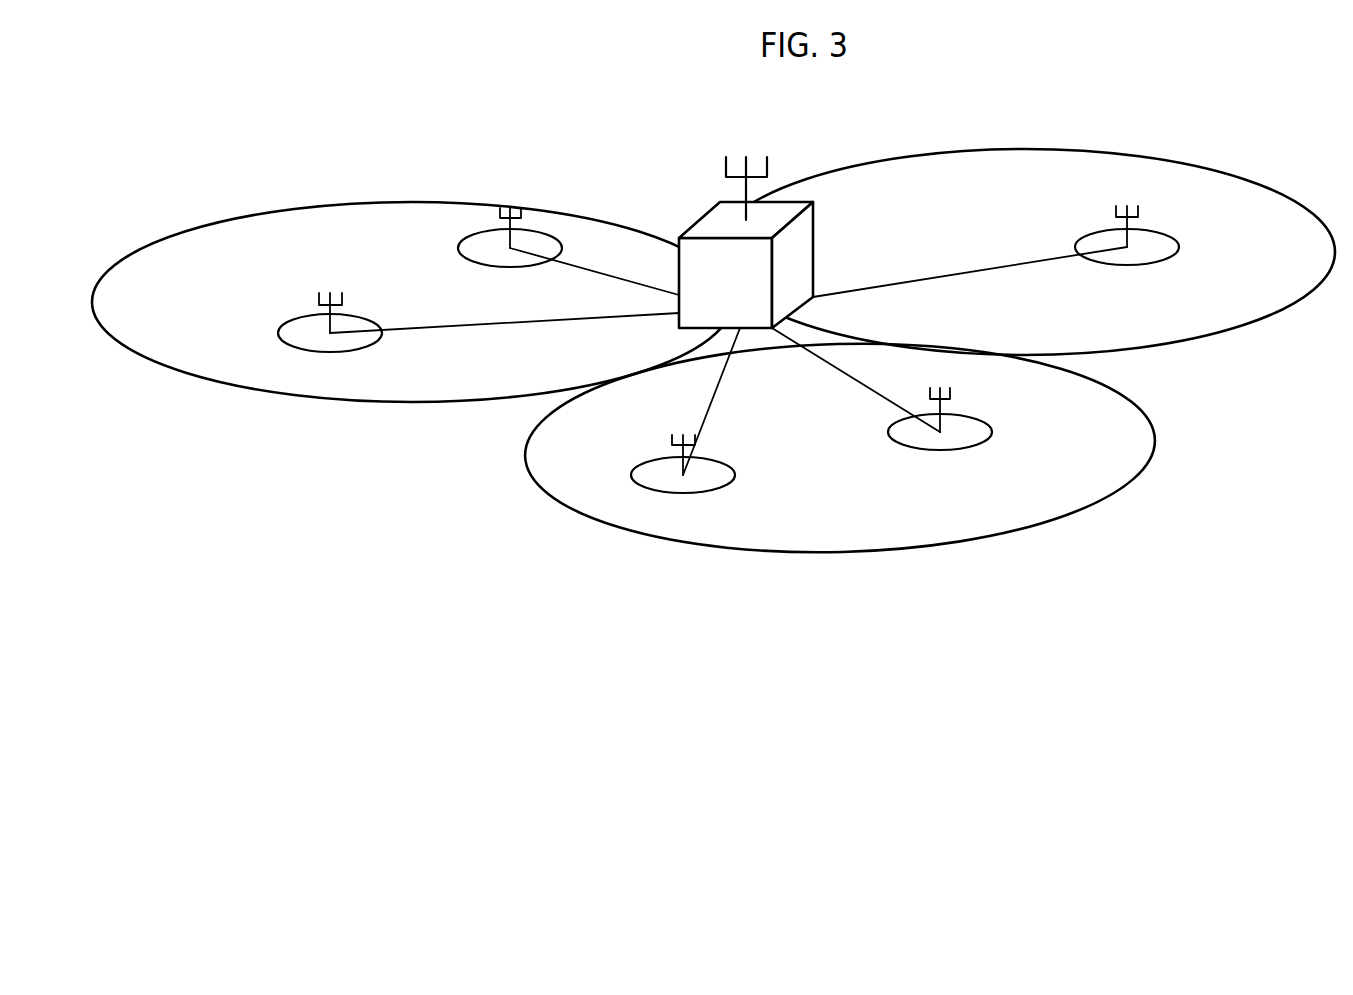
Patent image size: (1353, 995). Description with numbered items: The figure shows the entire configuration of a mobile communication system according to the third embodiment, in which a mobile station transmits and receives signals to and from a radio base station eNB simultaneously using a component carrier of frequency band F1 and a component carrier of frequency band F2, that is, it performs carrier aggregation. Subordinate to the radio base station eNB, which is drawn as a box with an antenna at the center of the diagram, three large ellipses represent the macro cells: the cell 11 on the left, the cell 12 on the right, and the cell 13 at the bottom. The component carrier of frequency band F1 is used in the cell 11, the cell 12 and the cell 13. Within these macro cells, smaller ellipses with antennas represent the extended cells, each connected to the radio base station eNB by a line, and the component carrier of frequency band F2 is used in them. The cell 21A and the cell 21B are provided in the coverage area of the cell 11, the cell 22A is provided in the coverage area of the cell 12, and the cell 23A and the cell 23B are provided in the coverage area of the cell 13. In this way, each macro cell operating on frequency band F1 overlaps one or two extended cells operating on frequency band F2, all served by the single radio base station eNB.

The cell 11 is at (242, 387).
The cell 12 is at (1127, 112).
The cell 13 is at (781, 553).
The cell 21A is at (460, 252).
The cell 21B is at (292, 326).
The cell 22A is at (1166, 238).
The cell 23A is at (720, 490).
The cell 23B is at (978, 447).
The radio base station eNB is at (781, 210).